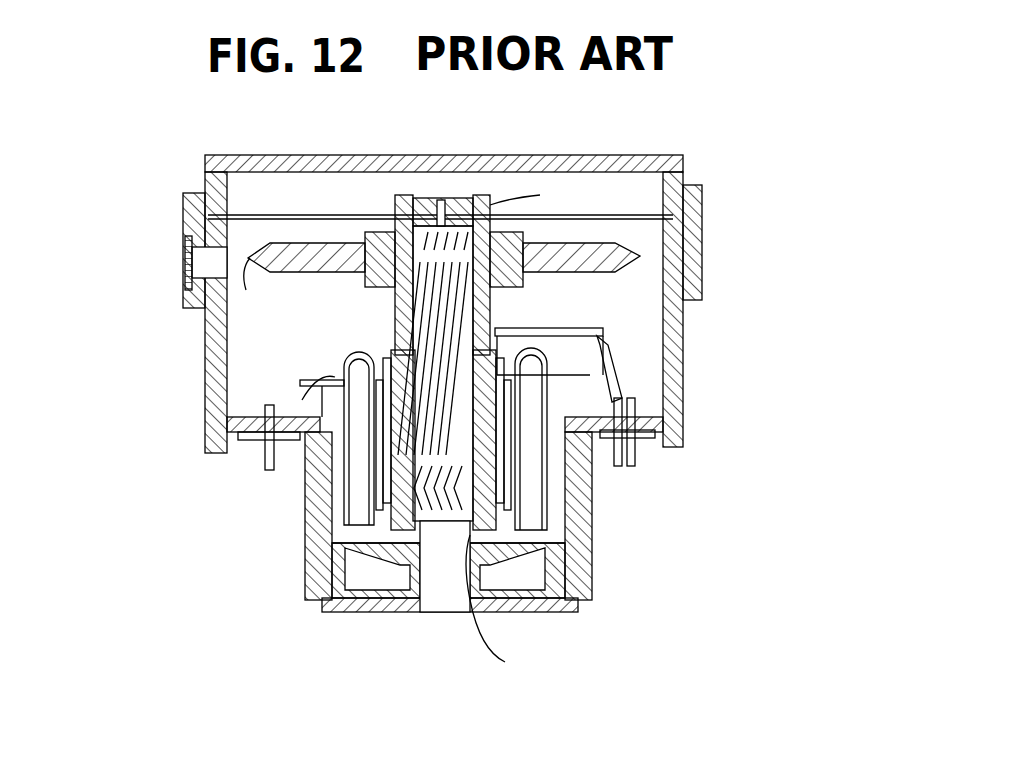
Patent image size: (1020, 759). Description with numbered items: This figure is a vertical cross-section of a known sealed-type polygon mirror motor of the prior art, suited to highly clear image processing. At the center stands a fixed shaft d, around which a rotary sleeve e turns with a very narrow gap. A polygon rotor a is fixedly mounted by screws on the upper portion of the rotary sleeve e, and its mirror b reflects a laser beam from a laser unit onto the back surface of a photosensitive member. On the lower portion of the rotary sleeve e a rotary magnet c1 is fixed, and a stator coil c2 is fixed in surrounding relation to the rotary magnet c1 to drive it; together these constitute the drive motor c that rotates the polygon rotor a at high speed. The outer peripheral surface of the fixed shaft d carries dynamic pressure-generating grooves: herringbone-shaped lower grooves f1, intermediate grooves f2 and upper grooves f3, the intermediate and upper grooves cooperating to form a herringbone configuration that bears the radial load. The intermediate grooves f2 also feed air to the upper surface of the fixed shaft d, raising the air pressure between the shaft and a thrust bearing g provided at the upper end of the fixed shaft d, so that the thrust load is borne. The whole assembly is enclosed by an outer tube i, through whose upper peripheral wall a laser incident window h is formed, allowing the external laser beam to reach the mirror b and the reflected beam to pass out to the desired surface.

The polygon rotor a is at (298, 245).
The mirror b is at (245, 288).
The drive motor c is at (352, 350).
The rotary magnet c1 is at (390, 357).
The stator coil c2 is at (334, 372).
The fixed shaft d is at (446, 600).
The rotary sleeve e is at (398, 205).
The lower grooves f1 is at (501, 609).
The intermediate grooves f2 is at (478, 338).
The upper grooves f3 is at (529, 190).
The thrust bearing g is at (428, 198).
The laser incident window h is at (184, 262).
The outer tube i is at (206, 396).